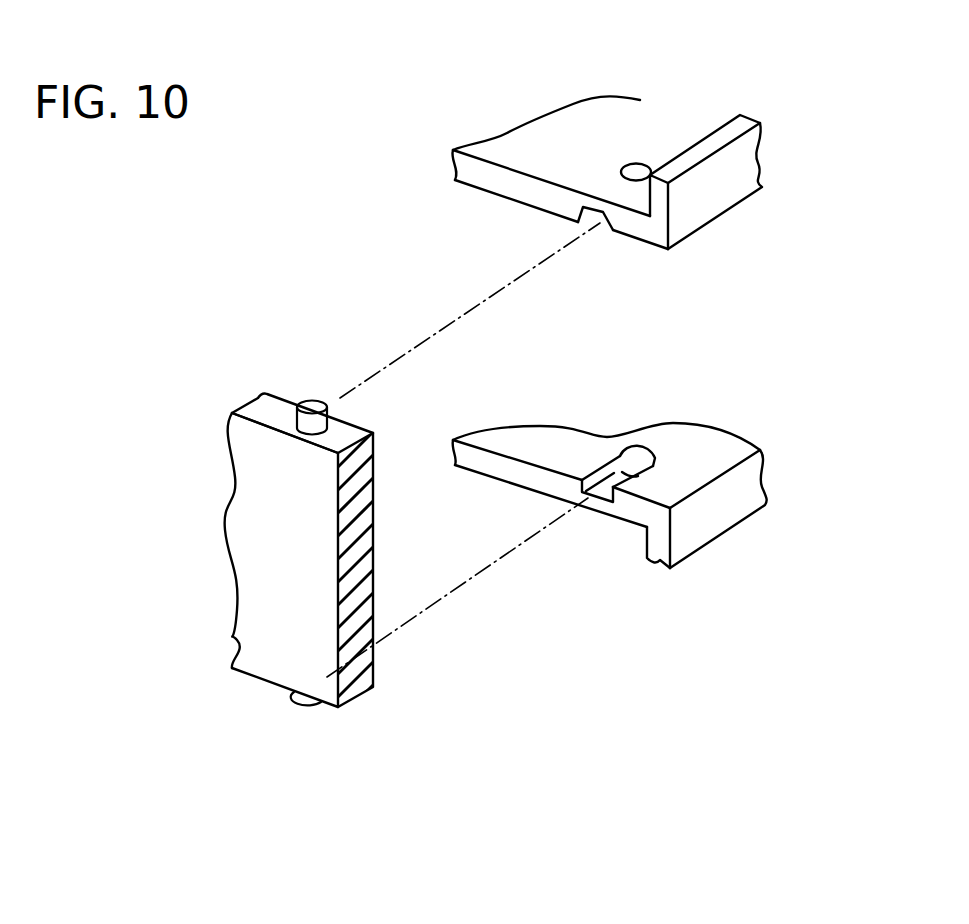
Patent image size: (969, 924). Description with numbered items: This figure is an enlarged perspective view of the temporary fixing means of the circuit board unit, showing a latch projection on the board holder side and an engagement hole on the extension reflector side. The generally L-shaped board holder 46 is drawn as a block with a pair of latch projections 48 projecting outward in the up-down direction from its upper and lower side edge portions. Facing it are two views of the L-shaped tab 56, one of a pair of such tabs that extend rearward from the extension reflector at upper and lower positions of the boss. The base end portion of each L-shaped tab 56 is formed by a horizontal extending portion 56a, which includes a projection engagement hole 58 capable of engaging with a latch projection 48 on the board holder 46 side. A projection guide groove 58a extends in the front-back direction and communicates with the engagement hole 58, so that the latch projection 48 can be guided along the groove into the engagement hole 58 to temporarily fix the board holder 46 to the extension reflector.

The board holder 46 is at (260, 638).
The latch projection 48 is at (310, 403).
The L-shaped tab 56 is at (720, 193).
The horizontal extending portion 56a is at (583, 140).
The projection engagement hole 58 is at (637, 170).
The projection guide groove 58a is at (600, 217).